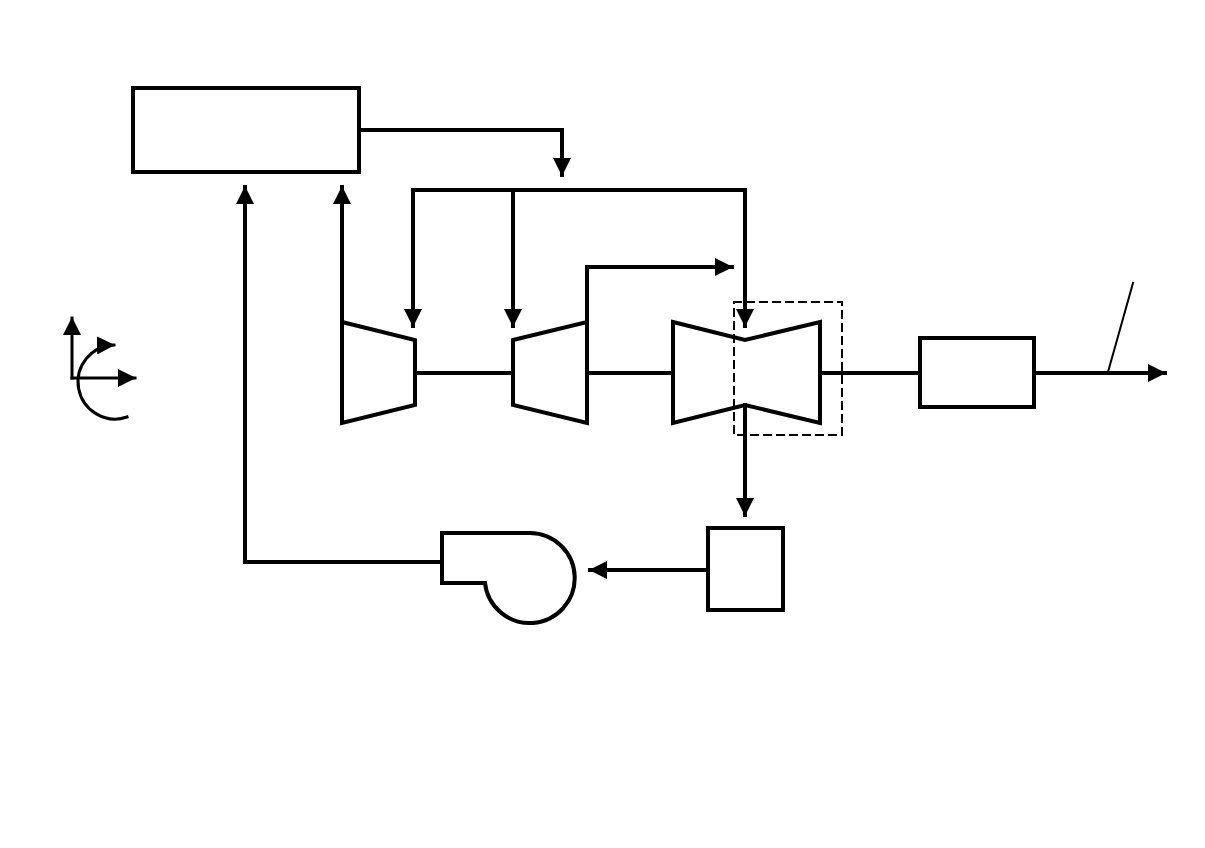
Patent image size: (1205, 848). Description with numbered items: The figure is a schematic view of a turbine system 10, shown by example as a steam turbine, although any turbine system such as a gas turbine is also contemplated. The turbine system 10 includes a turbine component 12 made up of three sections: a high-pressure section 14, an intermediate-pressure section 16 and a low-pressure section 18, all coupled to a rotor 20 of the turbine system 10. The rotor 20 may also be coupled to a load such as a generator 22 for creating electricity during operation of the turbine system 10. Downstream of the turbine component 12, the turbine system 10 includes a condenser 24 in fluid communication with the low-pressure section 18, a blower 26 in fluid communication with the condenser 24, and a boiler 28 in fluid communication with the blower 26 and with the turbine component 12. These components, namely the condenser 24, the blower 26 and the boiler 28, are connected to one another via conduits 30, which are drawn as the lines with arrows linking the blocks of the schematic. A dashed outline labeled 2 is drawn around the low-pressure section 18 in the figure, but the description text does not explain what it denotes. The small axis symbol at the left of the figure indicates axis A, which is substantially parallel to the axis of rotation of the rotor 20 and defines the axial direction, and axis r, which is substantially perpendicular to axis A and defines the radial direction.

The turbine system 10 is at (711, 121).
The turbine component 12 is at (318, 457).
The high-pressure section 14 is at (363, 425).
The intermediate-pressure section 16 is at (528, 408).
The low-pressure section 18 is at (783, 418).
The rotor 20 is at (630, 378).
The turbine section region 2 is at (826, 298).
The generator 22 is at (935, 336).
The condenser 24 is at (728, 612).
The blower 26 is at (527, 622).
The boiler 28 is at (282, 87).
The conduits 30 is at (455, 128).